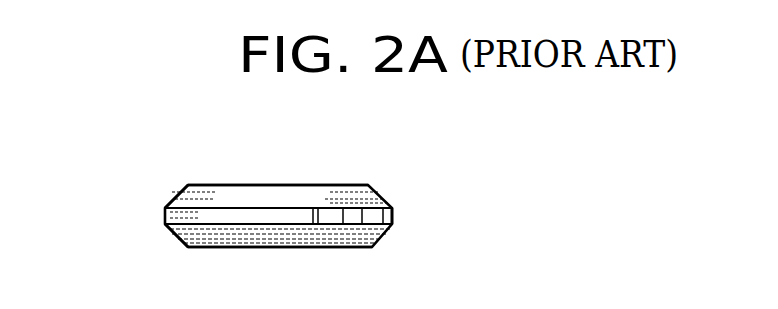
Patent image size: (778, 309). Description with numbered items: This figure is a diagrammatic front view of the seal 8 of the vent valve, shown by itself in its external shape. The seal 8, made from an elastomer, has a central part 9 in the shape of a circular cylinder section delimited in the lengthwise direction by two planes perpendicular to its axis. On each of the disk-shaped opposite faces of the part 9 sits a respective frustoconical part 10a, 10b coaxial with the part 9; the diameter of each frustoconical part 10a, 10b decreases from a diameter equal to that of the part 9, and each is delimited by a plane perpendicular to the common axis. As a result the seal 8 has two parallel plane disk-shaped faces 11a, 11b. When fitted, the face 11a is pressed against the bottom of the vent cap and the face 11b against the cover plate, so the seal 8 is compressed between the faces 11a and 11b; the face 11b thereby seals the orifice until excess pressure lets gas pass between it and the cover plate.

The seal 8 is at (242, 158).
The part in the shape of a circular cylinder section 9 is at (393, 219).
The frustoconical part 10a is at (190, 190).
The frustoconical part 10b is at (182, 238).
The plane disk-shaped face 11a is at (307, 187).
The plane disk-shaped face 11b is at (318, 250).